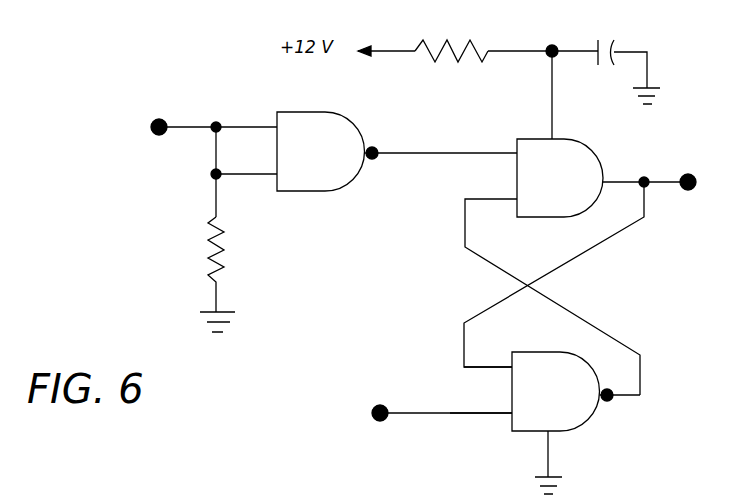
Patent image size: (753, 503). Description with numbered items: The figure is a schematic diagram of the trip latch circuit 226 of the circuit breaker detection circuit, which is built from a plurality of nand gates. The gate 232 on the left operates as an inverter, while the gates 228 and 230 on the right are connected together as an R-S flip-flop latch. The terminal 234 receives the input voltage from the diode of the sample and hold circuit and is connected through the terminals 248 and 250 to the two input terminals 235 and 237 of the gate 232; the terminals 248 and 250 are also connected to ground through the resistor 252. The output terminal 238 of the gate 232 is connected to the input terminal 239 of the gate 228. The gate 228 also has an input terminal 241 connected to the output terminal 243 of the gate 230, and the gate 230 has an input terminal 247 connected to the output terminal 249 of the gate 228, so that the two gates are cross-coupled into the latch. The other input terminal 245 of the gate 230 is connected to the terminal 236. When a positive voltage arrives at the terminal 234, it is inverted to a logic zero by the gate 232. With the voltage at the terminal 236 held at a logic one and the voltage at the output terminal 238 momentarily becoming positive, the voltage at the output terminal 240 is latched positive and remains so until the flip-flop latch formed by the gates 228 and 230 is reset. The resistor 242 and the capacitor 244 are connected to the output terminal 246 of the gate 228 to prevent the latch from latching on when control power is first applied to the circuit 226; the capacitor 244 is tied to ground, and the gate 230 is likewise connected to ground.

The trip latch circuit 226 is at (186, 75).
The nand gate 228 is at (532, 138).
The nand gate 230 is at (587, 423).
The nand gate 232 is at (347, 114).
The terminal 234 is at (156, 120).
The input terminal 235 is at (277, 128).
The terminal 236 is at (380, 406).
The input terminal 237 is at (277, 175).
The output terminal 238 is at (374, 148).
The input terminal 239 is at (508, 158).
The output terminal 240 is at (688, 175).
The input terminal 241 is at (513, 203).
The resistor 242 is at (437, 40).
The output terminal 243 is at (612, 398).
The capacitor 244 is at (597, 47).
The input terminal 245 is at (512, 417).
The output terminal 246 is at (548, 49).
The input terminal 247 is at (512, 368).
The terminal 248 is at (216, 124).
The output terminal 249 is at (645, 178).
The terminal 250 is at (213, 174).
The resistor 252 is at (221, 258).